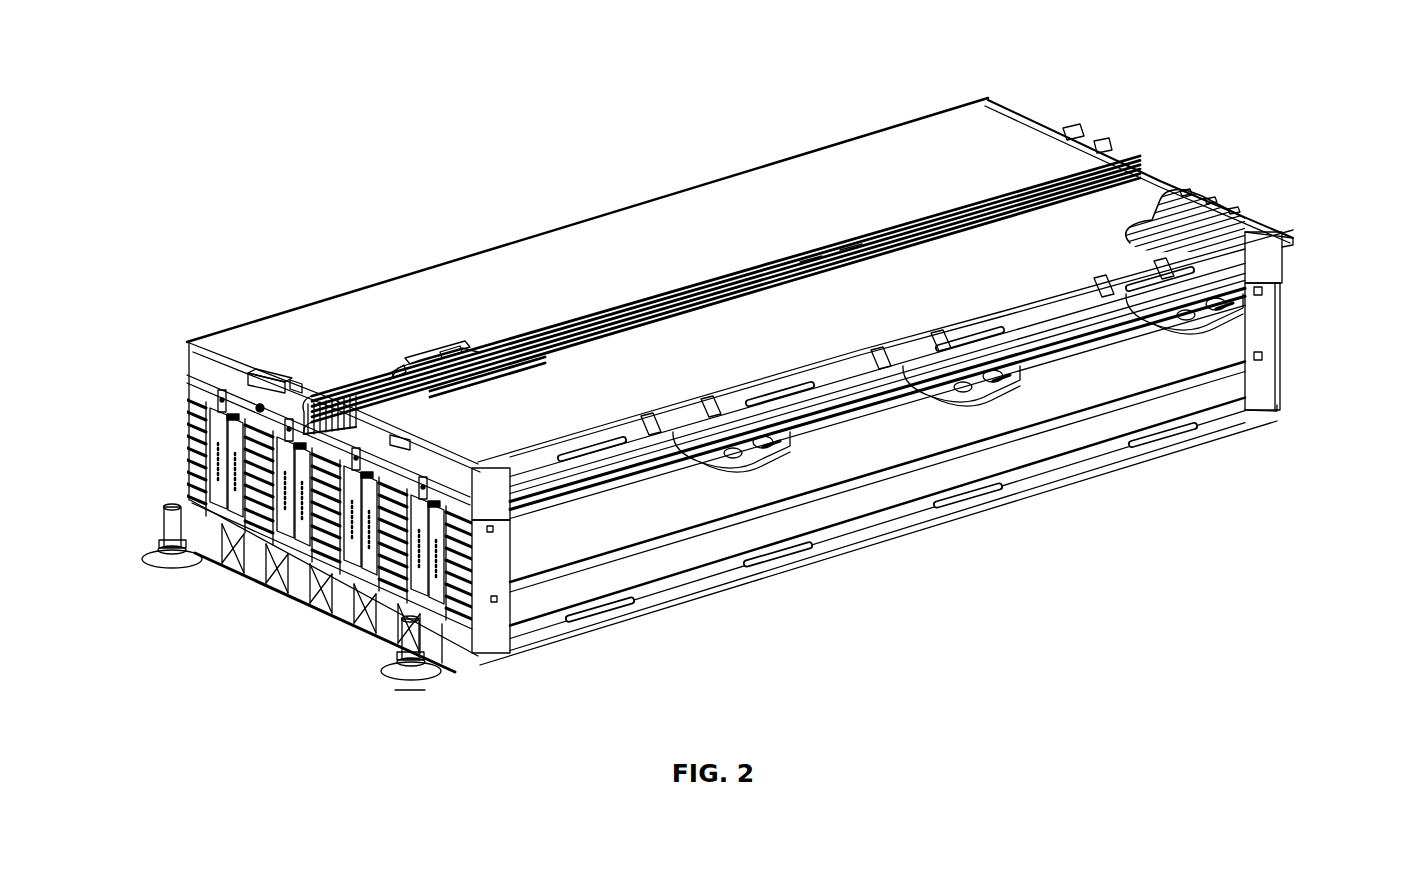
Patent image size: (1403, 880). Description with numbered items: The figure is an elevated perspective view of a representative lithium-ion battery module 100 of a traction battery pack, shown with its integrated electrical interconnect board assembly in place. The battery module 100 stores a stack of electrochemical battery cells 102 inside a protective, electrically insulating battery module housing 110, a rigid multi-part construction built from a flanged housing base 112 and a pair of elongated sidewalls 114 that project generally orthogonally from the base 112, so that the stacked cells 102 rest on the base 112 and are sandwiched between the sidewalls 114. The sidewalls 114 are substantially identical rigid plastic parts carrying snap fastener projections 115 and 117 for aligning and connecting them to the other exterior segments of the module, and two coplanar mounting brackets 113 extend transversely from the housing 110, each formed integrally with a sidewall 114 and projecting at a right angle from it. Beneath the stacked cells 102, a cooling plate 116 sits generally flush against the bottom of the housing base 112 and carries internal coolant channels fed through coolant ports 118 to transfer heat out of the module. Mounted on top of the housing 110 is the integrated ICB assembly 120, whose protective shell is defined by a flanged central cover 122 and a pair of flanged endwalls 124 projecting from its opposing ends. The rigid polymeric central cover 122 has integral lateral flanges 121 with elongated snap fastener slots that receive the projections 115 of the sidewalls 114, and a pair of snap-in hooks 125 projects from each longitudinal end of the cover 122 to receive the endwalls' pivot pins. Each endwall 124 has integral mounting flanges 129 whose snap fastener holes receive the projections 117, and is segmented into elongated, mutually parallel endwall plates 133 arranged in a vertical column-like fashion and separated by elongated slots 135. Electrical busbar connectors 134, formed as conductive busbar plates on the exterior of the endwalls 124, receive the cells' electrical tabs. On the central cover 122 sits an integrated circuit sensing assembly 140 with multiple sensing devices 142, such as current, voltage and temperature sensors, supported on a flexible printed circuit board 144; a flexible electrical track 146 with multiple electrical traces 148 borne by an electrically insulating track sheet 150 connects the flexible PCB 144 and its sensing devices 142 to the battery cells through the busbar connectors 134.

The battery module 100 is at (292, 77).
The battery cells 102 is at (1185, 200).
The battery module housing 110 is at (1215, 516).
The housing base 112 is at (820, 553).
The mounting brackets 113 is at (1250, 258).
The sidewalls 114 is at (1227, 390).
The snap fastener projections 115 is at (597, 455).
The cooling plate 116 is at (404, 692).
The snap fastener projections 117 is at (1263, 357).
The coolant ports 118 is at (163, 525).
The integrated interconnect board (ICB) assembly 120 is at (632, 182).
The lateral flanges 121 is at (660, 437).
The central cover 122 is at (880, 160).
The endwalls 124 is at (1040, 125).
The snap-in hooks 125 is at (246, 380).
The mounting flanges 129 is at (497, 645).
The endwall plates 133 is at (245, 558).
The electrical busbar connectors 134 is at (208, 418).
The elongated slots 135 is at (228, 552).
The integrated circuit (IC) sensing assembly 140 is at (443, 335).
The sensing devices 142 is at (470, 357).
The flexible printed circuit board (PCB) 144 is at (405, 365).
The flexible electrical track 146 is at (822, 215).
The electrical traces 148 is at (850, 247).
The track sheet 150 is at (783, 262).